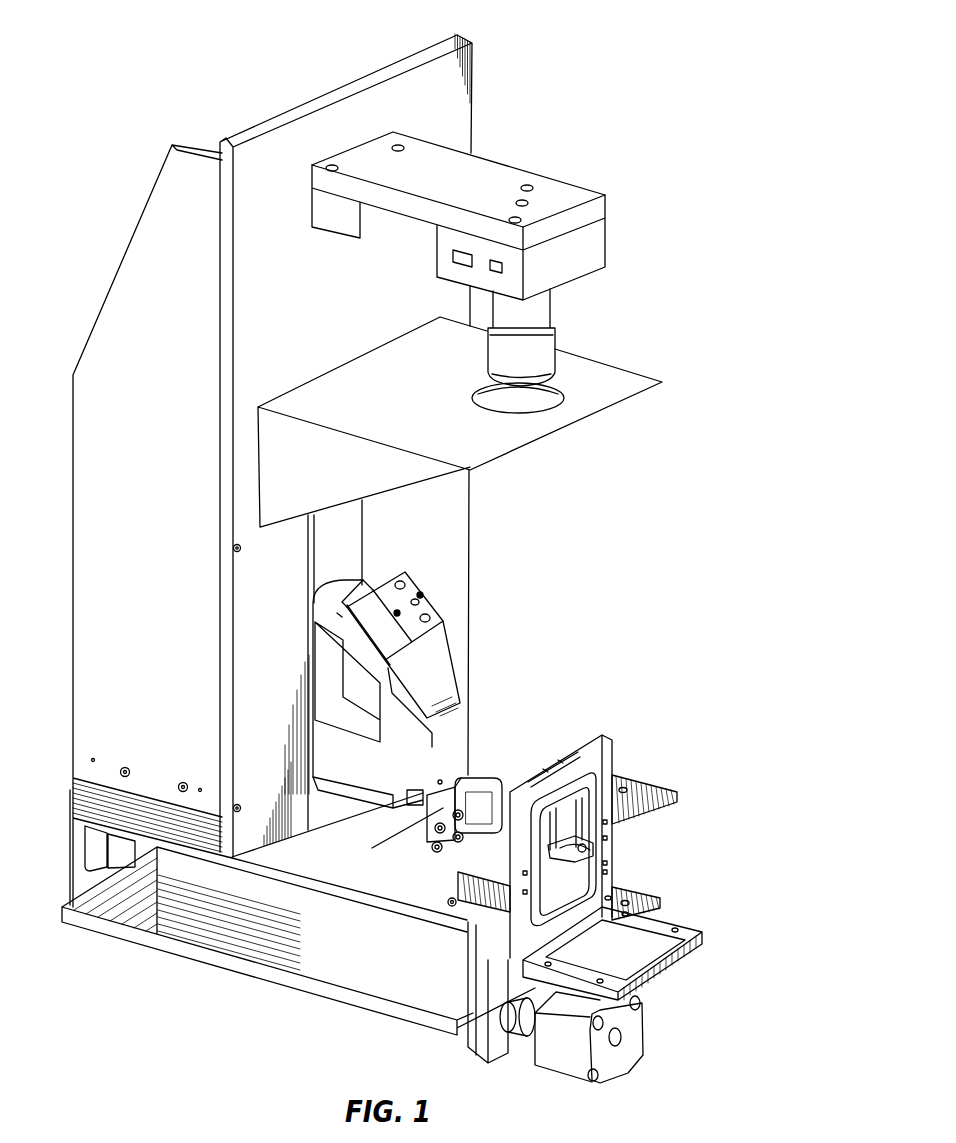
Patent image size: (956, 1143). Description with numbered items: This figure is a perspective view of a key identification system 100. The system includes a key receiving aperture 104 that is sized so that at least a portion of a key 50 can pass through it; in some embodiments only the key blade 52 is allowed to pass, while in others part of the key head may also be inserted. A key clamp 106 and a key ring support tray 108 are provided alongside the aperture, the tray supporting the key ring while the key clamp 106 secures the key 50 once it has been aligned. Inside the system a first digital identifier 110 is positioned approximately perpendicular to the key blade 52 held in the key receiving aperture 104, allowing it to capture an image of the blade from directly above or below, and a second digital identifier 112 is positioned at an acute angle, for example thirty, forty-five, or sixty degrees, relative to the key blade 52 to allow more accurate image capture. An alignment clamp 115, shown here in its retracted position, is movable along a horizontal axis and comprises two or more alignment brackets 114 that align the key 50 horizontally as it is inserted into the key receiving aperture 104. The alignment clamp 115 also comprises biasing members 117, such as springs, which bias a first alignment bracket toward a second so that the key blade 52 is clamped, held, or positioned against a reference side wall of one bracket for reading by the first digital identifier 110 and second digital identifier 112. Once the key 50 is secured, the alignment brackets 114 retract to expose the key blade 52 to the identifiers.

The key identification system 100 is at (207, 88).
The first digital identifier 110 is at (533, 358).
The second digital identifier 112 is at (428, 688).
The alignment clamp 115 is at (475, 757).
The alignment brackets 114 is at (440, 808).
The biasing members 117 is at (455, 850).
The key clamp 106 is at (620, 792).
The key blade 52 is at (595, 832).
The key 50 is at (615, 860).
The key receiving aperture 104 is at (552, 768).
The key ring support tray 108 is at (633, 950).